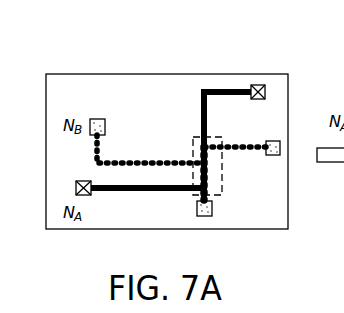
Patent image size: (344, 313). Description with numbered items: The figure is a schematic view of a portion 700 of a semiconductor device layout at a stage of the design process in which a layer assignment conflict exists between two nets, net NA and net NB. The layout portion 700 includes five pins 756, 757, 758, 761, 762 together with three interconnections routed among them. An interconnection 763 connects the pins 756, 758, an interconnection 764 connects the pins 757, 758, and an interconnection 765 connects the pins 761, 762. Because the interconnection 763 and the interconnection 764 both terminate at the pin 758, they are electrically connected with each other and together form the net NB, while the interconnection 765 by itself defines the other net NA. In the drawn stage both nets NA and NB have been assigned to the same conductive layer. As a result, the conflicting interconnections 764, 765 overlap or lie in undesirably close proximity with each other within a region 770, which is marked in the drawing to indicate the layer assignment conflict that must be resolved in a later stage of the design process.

The layout portion 700 is at (281, 54).
The pin 756 is at (97, 118).
The pin 757 is at (280, 152).
The pin 758 is at (212, 210).
The pin 761 is at (266, 90).
The pin 762 is at (76, 186).
The interconnection 763 is at (141, 162).
The interconnection 764 is at (230, 144).
The interconnection 765 is at (135, 191).
The region 770 is at (222, 167).